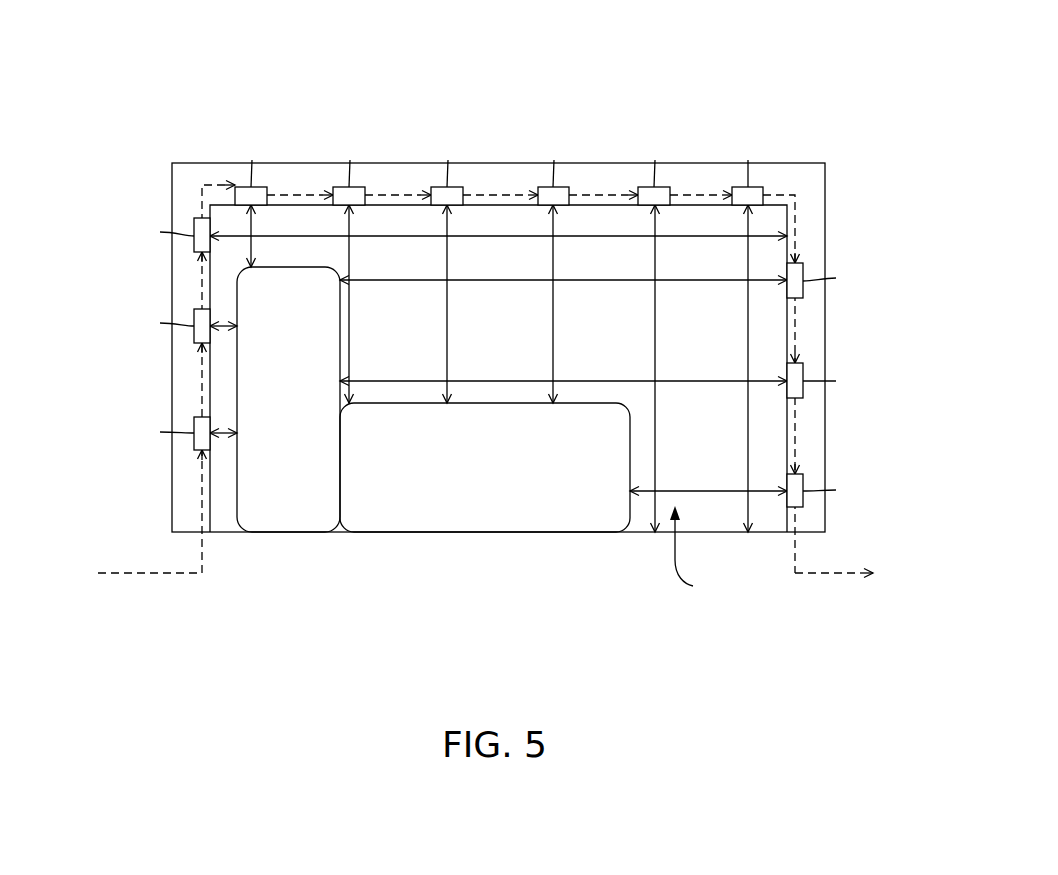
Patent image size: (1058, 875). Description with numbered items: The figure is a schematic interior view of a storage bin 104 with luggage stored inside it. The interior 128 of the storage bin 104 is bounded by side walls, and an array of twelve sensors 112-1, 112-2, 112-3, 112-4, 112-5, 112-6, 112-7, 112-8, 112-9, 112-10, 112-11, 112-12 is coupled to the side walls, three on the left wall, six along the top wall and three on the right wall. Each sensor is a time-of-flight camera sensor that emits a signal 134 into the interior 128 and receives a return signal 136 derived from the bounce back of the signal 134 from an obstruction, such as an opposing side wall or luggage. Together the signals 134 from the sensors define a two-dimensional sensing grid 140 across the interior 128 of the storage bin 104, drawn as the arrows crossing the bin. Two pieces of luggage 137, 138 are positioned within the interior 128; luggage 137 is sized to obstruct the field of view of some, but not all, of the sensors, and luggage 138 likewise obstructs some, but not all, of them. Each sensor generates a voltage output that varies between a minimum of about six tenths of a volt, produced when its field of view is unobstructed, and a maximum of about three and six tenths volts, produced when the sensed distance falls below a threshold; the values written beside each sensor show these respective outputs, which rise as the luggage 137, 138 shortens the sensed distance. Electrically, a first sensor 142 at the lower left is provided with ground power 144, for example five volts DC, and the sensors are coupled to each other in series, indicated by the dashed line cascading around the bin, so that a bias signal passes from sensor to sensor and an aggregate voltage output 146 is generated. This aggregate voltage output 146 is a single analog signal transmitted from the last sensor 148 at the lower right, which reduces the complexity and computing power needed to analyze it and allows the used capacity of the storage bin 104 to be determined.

The storage bin 104 is at (732, 80).
The sensor 112-1 is at (194, 417).
The sensor 112-2 is at (194, 309).
The sensor 112-3 is at (194, 218).
The sensor 112-4 is at (267, 187).
The sensor 112-5 is at (365, 187).
The sensor 112-6 is at (463, 187).
The sensor 112-7 is at (569, 187).
The sensor 112-8 is at (670, 187).
The sensor 112-9 is at (763, 187).
The sensor 112-10 is at (797, 263).
The sensor 112-11 is at (797, 363).
The sensor 112-12 is at (797, 474).
The interior 128 is at (702, 553).
The signal 134 is at (228, 233).
The return signal 136 is at (243, 222).
The luggage 137 is at (232, 500).
The luggage 138 is at (630, 464).
The two-dimensional sensing grid 140 is at (778, 208).
The first sensor 142 is at (218, 379).
The ground power 144 is at (142, 573).
The aggregate voltage output 146 is at (830, 573).
The last sensor 148 is at (779, 384).